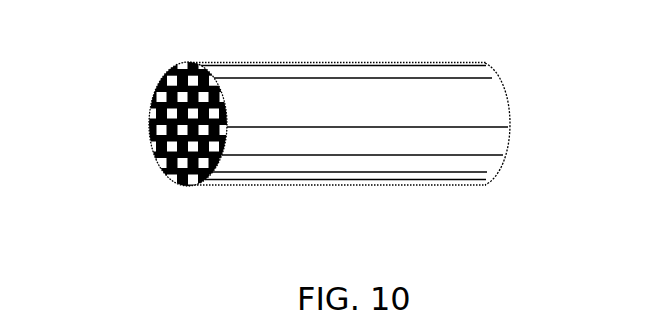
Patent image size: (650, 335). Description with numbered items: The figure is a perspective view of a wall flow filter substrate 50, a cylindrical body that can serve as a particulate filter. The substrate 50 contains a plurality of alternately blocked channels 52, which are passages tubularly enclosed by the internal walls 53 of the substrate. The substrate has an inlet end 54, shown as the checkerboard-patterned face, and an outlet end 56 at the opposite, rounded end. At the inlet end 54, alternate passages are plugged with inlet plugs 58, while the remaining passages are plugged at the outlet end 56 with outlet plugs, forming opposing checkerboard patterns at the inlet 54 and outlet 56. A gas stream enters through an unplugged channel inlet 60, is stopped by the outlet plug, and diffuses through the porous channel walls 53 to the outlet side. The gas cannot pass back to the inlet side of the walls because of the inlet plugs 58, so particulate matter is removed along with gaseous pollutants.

The wall flow filter substrate 50 is at (412, 214).
The alternately blocked channels 52 is at (163, 87).
The internal walls 53 is at (393, 87).
The inlet end 54 is at (112, 145).
The outlet end 56 is at (536, 133).
The inlet plugs 58 is at (213, 70).
The unplugged channel inlet 60 is at (193, 168).